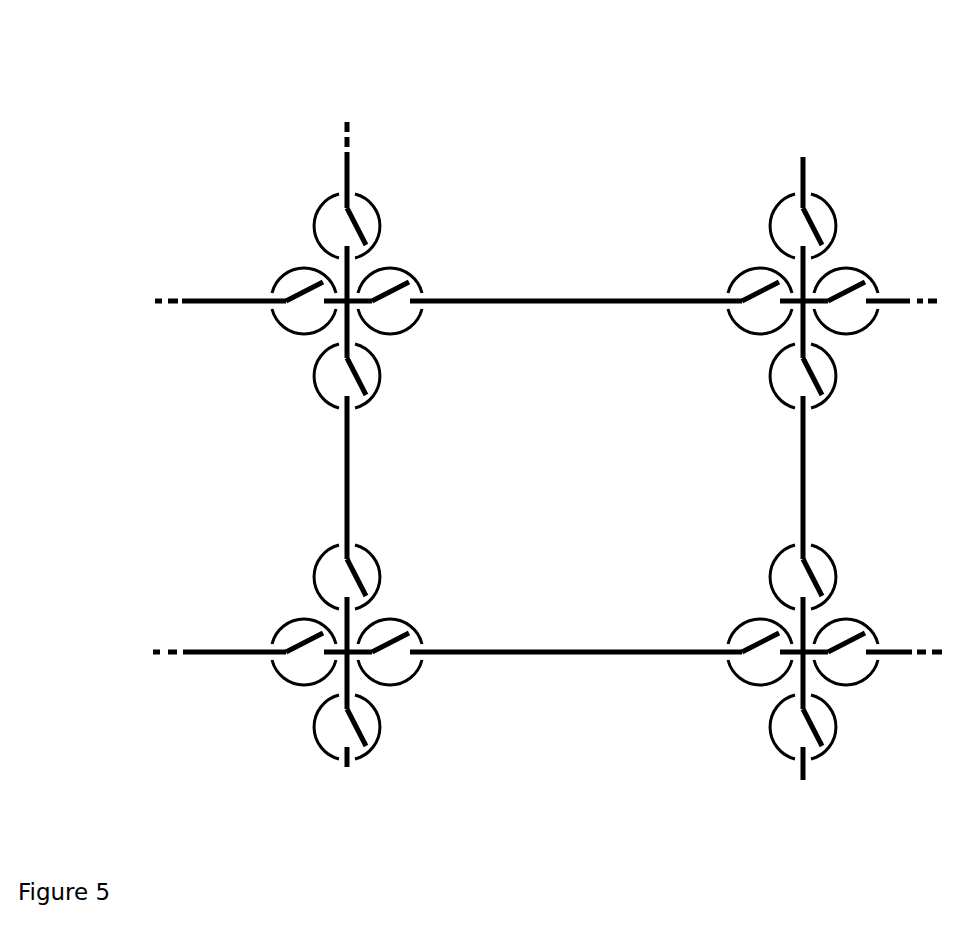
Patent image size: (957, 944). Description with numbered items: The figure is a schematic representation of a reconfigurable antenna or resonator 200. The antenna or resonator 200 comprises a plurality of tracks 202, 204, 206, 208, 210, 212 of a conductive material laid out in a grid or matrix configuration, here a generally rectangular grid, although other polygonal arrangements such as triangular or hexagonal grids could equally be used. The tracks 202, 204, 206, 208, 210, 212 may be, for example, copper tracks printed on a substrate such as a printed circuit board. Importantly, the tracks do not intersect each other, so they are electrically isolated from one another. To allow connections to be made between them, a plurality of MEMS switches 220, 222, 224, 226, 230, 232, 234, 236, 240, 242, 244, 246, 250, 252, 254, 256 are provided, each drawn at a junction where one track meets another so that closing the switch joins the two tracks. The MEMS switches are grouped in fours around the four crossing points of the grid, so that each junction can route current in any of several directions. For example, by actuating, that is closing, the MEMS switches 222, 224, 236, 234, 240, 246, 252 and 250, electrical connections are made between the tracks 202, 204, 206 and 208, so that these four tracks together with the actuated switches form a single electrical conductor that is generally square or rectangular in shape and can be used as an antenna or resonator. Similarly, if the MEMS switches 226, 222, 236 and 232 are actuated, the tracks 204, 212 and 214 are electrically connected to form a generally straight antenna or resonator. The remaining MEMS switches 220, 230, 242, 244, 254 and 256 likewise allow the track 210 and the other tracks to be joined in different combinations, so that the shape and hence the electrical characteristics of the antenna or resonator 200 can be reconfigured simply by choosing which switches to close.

The reconfigurable antenna or resonator 200 is at (97, 135).
The track 202 is at (547, 295).
The track 204 is at (570, 650).
The track 206 is at (350, 472).
The track 208 is at (805, 468).
The track 210 is at (205, 298).
The track 212 is at (205, 648).
The track 214 is at (910, 297).
The MEMS switch 220 is at (367, 727).
The MEMS switch 222 is at (400, 672).
The MEMS switch 224 is at (367, 577).
The MEMS switch 226 is at (292, 673).
The MEMS switch 230 is at (827, 725).
The MEMS switch 232 is at (860, 672).
The MEMS switch 234 is at (827, 575).
The MEMS switch 236 is at (752, 672).
The MEMS switch 240 is at (824, 370).
The MEMS switch 242 is at (857, 318).
The MEMS switch 244 is at (824, 221).
The MEMS switch 246 is at (748, 317).
The MEMS switch 250 is at (365, 372).
The MEMS switch 252 is at (397, 318).
The MEMS switch 254 is at (365, 222).
The MEMS switch 256 is at (290, 318).